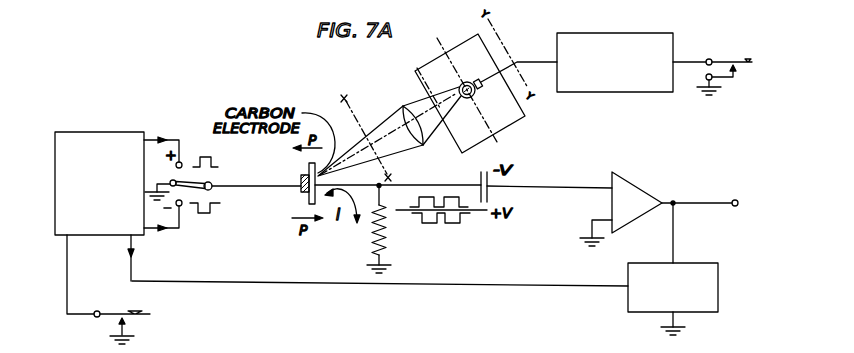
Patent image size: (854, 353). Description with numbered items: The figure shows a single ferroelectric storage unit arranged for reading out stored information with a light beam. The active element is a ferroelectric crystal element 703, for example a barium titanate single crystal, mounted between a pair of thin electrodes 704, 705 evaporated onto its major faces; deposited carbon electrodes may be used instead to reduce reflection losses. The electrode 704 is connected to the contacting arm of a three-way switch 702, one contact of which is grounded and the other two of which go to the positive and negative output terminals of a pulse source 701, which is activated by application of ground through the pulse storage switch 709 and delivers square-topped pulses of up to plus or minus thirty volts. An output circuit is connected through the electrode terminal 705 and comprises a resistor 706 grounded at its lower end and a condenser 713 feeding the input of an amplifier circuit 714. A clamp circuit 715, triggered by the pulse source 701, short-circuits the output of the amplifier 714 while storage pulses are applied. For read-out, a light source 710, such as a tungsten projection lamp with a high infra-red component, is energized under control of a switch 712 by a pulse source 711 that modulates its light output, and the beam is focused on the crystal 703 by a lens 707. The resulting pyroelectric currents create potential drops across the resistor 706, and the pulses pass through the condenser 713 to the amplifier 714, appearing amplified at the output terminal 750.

The pulse source 701 is at (105, 131).
The three-way switch 702 is at (213, 181).
The ferroelectric crystal element 703 is at (310, 204).
The platinum electrode 704 is at (301, 185).
The electrode terminal 705 is at (318, 180).
The resistor 706 is at (389, 222).
The lens 707 is at (405, 105).
The pulse storage switch 709 is at (120, 311).
The light source 710 is at (434, 59).
The pulse source 711 is at (618, 33).
The switch 712 is at (757, 62).
The condenser 713 is at (480, 174).
The amplifier circuit 714 is at (639, 186).
The clamp circuit 715 is at (718, 293).
The output terminal 750 is at (733, 199).